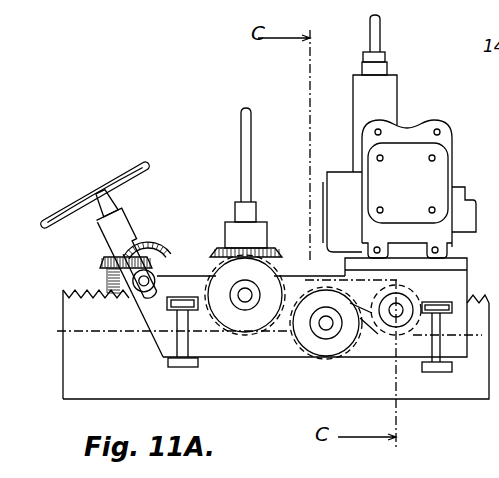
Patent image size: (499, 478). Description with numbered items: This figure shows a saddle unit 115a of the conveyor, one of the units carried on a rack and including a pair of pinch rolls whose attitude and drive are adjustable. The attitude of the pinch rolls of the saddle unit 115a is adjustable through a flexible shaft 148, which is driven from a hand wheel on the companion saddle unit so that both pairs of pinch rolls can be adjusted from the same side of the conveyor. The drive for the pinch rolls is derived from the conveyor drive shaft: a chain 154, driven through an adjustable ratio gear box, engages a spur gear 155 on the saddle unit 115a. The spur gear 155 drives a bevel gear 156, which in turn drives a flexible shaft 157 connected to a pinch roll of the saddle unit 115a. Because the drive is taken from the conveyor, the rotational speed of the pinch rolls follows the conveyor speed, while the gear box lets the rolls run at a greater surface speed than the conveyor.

The flexible shaft 148 is at (467, 208).
The chain 154 is at (102, 332).
The spur gear 155 is at (245, 322).
The bevel gear 156 is at (278, 246).
The flexible shaft 157 is at (250, 157).
The saddle unit 115a is at (189, 257).